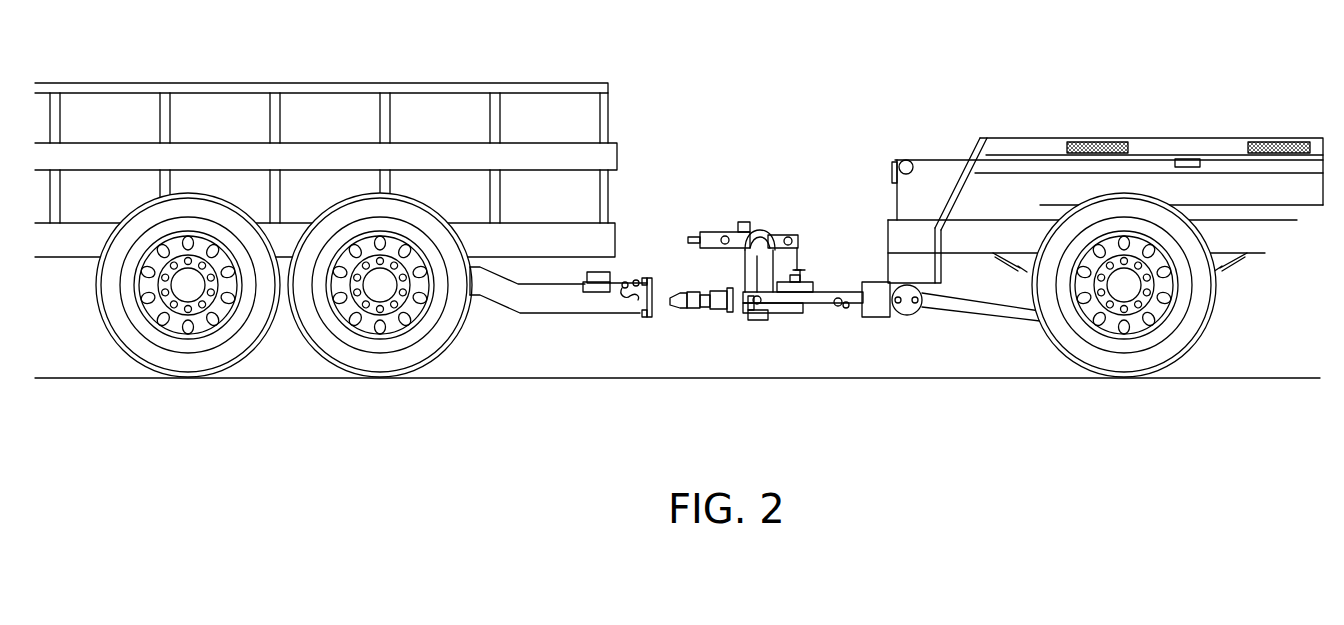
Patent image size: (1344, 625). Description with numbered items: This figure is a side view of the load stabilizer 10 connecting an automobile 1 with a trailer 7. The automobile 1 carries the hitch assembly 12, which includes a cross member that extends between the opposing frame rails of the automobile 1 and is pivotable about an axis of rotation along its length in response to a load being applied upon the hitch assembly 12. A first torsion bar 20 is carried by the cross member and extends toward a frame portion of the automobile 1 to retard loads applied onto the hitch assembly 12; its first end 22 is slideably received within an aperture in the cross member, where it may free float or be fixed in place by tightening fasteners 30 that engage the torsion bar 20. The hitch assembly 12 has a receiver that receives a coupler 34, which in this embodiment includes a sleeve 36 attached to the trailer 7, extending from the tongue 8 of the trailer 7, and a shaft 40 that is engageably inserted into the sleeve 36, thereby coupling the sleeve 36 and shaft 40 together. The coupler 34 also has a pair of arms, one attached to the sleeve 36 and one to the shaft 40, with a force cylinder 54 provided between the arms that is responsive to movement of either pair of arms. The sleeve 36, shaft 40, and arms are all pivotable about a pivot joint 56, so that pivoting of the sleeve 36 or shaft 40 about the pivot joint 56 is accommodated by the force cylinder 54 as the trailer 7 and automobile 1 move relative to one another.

The automobile 1 is at (1065, 226).
The trailer 7 is at (310, 92).
The tongue 8 is at (540, 298).
The load stabilizer 10 is at (778, 272).
The hitch assembly 12 is at (890, 281).
The first torsion bar 20 is at (998, 311).
The first end 22 is at (884, 303).
The fasteners 30 is at (915, 303).
The coupler 34 is at (752, 332).
The sleeve 36 is at (570, 313).
The shaft 40 is at (712, 303).
The force cylinder 54 is at (757, 236).
The pivot joint 56 is at (752, 320).